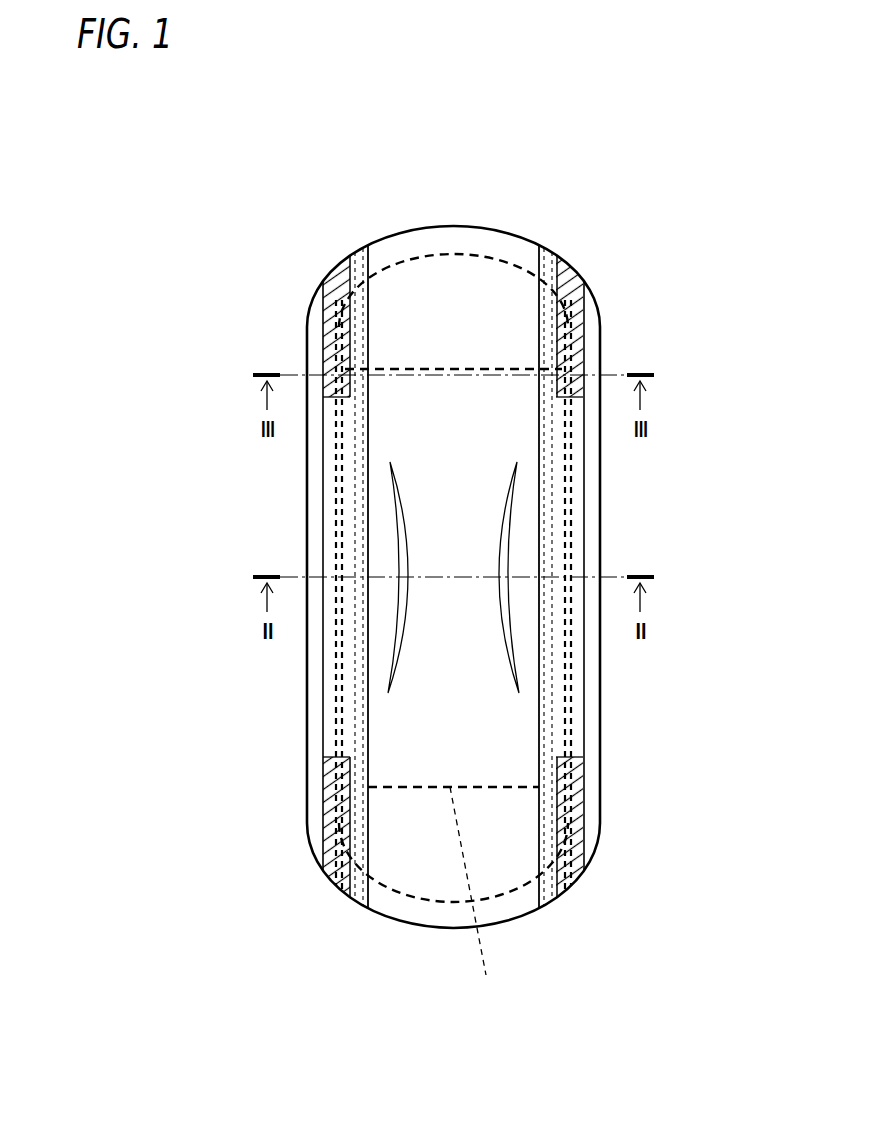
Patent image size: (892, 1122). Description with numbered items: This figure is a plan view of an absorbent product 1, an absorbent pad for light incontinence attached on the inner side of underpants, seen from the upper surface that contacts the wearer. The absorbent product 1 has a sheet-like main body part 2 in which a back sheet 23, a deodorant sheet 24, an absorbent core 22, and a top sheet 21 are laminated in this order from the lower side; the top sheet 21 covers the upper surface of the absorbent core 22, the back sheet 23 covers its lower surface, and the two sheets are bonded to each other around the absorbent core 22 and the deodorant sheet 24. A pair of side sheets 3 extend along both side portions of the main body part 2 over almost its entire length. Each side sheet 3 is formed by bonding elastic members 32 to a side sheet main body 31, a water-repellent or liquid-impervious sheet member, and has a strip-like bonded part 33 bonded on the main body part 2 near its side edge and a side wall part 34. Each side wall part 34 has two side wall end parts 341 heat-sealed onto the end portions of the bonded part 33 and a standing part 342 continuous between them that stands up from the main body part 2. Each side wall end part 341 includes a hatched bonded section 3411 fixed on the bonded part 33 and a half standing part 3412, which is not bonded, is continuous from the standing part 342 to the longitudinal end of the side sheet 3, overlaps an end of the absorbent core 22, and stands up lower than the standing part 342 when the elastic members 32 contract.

The absorbent product 1 is at (203, 168).
The main body part 2 is at (458, 997).
The top sheet 21 is at (439, 880).
The absorbent core 22 is at (484, 876).
The back sheet 23 is at (490, 928).
The deodorant sheet 24 is at (405, 895).
The side sheet 3 is at (186, 663).
The side sheet main body 31 is at (334, 479).
The elastic member 32 is at (343, 507).
The bonded part 33 is at (310, 668).
The side wall part 34 is at (190, 725).
The side wall end part 341 is at (330, 195).
The standing part 342 is at (348, 712).
The bonded section 3411 is at (337, 296).
The half standing part 3412 is at (358, 276).